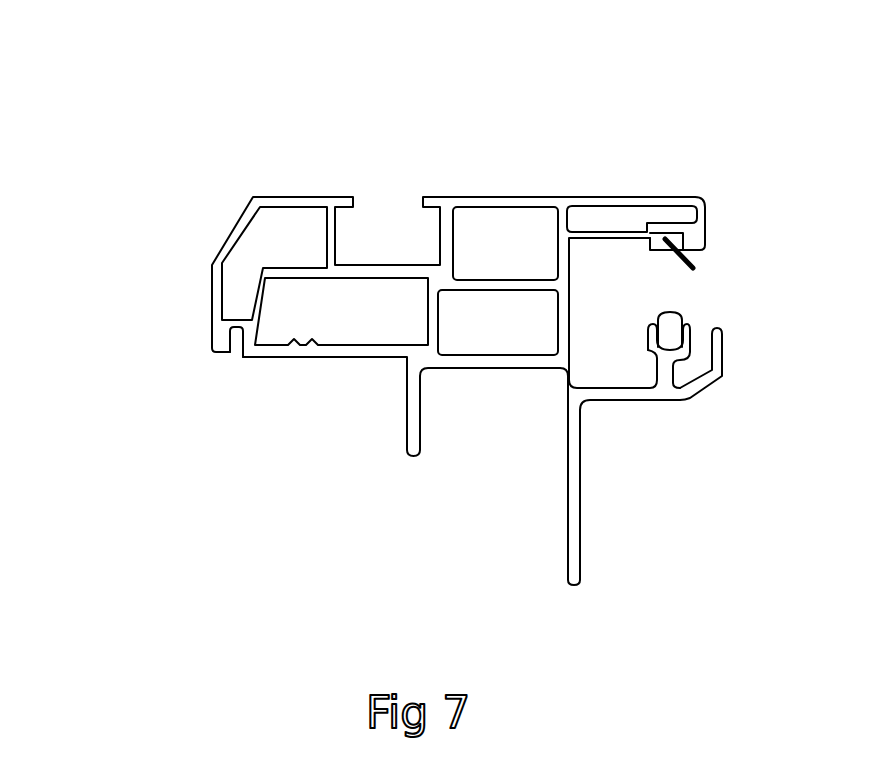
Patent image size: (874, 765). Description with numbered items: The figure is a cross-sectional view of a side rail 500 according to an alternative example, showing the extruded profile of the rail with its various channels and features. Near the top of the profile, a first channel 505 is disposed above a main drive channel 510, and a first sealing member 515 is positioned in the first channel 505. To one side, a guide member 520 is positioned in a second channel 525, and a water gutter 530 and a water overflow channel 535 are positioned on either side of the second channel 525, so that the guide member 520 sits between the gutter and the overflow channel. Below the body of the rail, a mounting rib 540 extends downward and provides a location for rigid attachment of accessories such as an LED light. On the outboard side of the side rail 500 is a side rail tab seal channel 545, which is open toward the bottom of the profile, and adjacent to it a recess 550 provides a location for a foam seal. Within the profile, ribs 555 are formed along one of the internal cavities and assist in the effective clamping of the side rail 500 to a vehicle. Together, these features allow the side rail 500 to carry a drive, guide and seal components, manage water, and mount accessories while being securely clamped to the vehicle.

The side rail 500 is at (468, 322).
The first channel 505 is at (683, 198).
The main drive channel 510 is at (585, 260).
The first sealing member 515 is at (707, 250).
The guide member 520 is at (667, 325).
The second channel 525 is at (690, 325).
The water gutter 530 is at (617, 370).
The water overflow channel 535 is at (693, 362).
The mounting rib 540 is at (568, 493).
The side rail tab seal channel 545 is at (235, 357).
The recess 550 is at (310, 357).
The ribs 555 is at (320, 343).